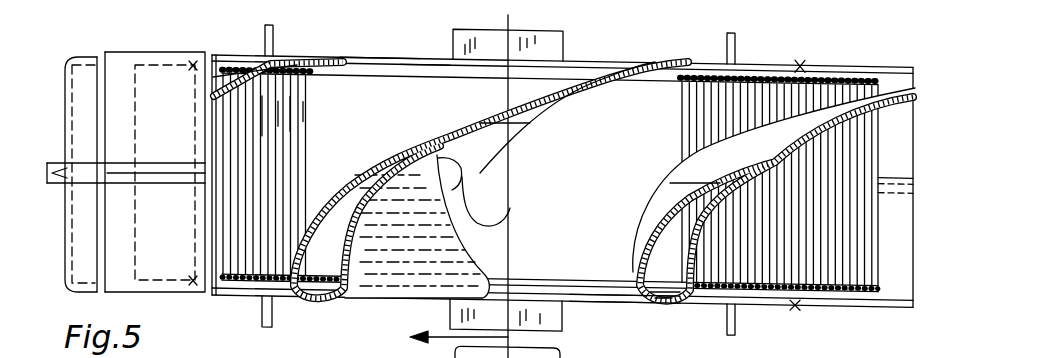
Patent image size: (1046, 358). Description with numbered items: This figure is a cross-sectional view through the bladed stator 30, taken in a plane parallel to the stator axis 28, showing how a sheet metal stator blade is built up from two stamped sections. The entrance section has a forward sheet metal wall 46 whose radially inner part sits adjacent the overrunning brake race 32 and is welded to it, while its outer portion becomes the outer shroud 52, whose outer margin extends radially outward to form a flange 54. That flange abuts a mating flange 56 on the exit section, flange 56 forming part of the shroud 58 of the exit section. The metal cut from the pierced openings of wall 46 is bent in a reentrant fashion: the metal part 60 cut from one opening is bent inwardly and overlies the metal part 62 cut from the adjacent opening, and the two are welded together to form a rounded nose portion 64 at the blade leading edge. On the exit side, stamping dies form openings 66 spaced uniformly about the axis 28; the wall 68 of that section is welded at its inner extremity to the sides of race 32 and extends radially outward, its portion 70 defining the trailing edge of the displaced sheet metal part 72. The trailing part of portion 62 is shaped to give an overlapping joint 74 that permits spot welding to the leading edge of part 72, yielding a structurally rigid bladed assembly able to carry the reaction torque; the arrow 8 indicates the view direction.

The direction of flow arrow 8 is at (454, 344).
The axis 28 is at (505, 258).
The bladed stator 30 is at (672, 62).
The race 32 is at (778, 273).
The forward sheet metal wall 46 is at (616, 300).
The outer shroud 52 is at (83, 268).
The flange 54 is at (152, 183).
The flange 56 is at (178, 163).
The shroud 58 is at (84, 62).
The metal part 60 is at (335, 210).
The metal part 62 is at (512, 200).
The rounded nose portion 64 is at (312, 300).
The openings 66 is at (372, 58).
The wall 68 is at (424, 58).
The portion of wall 70 is at (322, 57).
The sheet metal part 72 is at (470, 124).
The overlapping parts 74 is at (498, 166).